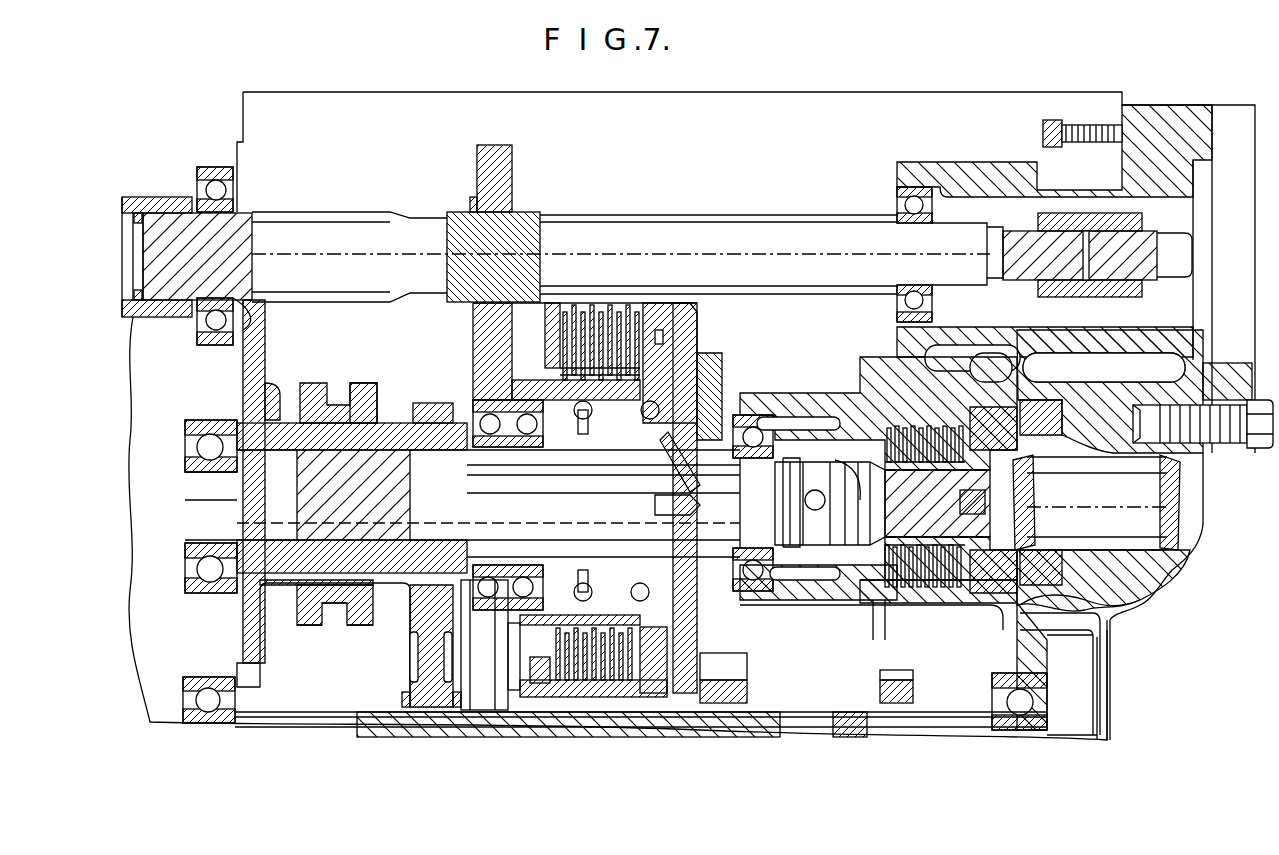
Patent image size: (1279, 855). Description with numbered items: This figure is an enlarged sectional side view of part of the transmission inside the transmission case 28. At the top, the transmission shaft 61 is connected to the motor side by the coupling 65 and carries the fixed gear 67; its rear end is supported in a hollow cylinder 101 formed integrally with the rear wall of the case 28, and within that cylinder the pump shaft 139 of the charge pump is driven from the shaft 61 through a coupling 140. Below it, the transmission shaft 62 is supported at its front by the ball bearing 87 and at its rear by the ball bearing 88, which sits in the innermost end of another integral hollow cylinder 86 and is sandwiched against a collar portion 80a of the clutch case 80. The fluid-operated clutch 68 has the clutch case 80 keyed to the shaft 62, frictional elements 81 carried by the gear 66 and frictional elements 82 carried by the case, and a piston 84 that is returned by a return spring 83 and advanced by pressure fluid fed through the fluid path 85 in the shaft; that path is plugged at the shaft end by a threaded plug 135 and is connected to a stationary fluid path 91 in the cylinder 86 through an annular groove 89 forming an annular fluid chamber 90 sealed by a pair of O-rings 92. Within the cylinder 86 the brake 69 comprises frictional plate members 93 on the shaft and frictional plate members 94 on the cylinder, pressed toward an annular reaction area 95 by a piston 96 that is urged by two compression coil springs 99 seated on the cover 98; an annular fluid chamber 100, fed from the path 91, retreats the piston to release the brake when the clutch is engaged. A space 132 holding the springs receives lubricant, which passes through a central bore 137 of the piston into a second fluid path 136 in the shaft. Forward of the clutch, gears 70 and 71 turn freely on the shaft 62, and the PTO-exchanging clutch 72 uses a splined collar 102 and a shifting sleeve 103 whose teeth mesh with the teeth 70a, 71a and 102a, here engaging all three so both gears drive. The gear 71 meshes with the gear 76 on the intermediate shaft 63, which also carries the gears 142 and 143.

The transmission case 28 is at (1057, 683).
The transmission shaft 61 is at (745, 243).
The transmission shaft 62 is at (483, 467).
The intermediate shaft 63 is at (615, 732).
The coupling 65 is at (168, 203).
The gear 66 is at (497, 650).
The gear 67 is at (495, 155).
The fluid-operated clutch 68 is at (653, 300).
The brake 69 is at (923, 605).
The gear 70 is at (253, 333).
The teeth 70a is at (287, 423).
The gear 71 is at (415, 372).
The teeth 71a is at (380, 420).
The PTO-exchanging clutch 72 is at (320, 630).
The gear 76 is at (460, 673).
The clutch case 80 is at (640, 693).
The collar portion 80a is at (713, 435).
The frictional elements 81 is at (605, 310).
The frictional elements 82 is at (583, 305).
The return spring 83 is at (577, 580).
The piston 84 is at (690, 355).
The fluid path 85 is at (667, 510).
The hollow cylinder 86 is at (880, 400).
The ball bearing 87 is at (197, 447).
The ball bearing 88 is at (748, 591).
The annular groove 89 is at (798, 585).
The annular fluid chamber 90 is at (837, 585).
The fluid path 91 is at (815, 480).
The O-rings 92 is at (805, 470).
The frictional plate members 93 is at (960, 595).
The frictional plate members 94 is at (940, 430).
The annular reaction area 95 is at (905, 430).
The piston 96 is at (1053, 357).
The cover 98 is at (1160, 465).
The compression coil springs 99 is at (1180, 555).
The annular fluid chamber 100 is at (1110, 617).
The hollow cylinder 101 is at (963, 167).
The splined collar 102 is at (293, 590).
The teeth 102a is at (337, 590).
The shifting sleeve 103 is at (318, 383).
The space 132 is at (1103, 502).
The threaded plug 135 is at (1020, 507).
The fluid path 136 is at (860, 460).
The central bore 137 is at (1108, 650).
The pump shaft 139 is at (1150, 253).
The coupling 140 is at (1087, 217).
The gear 142 is at (718, 660).
The gear 143 is at (878, 677).